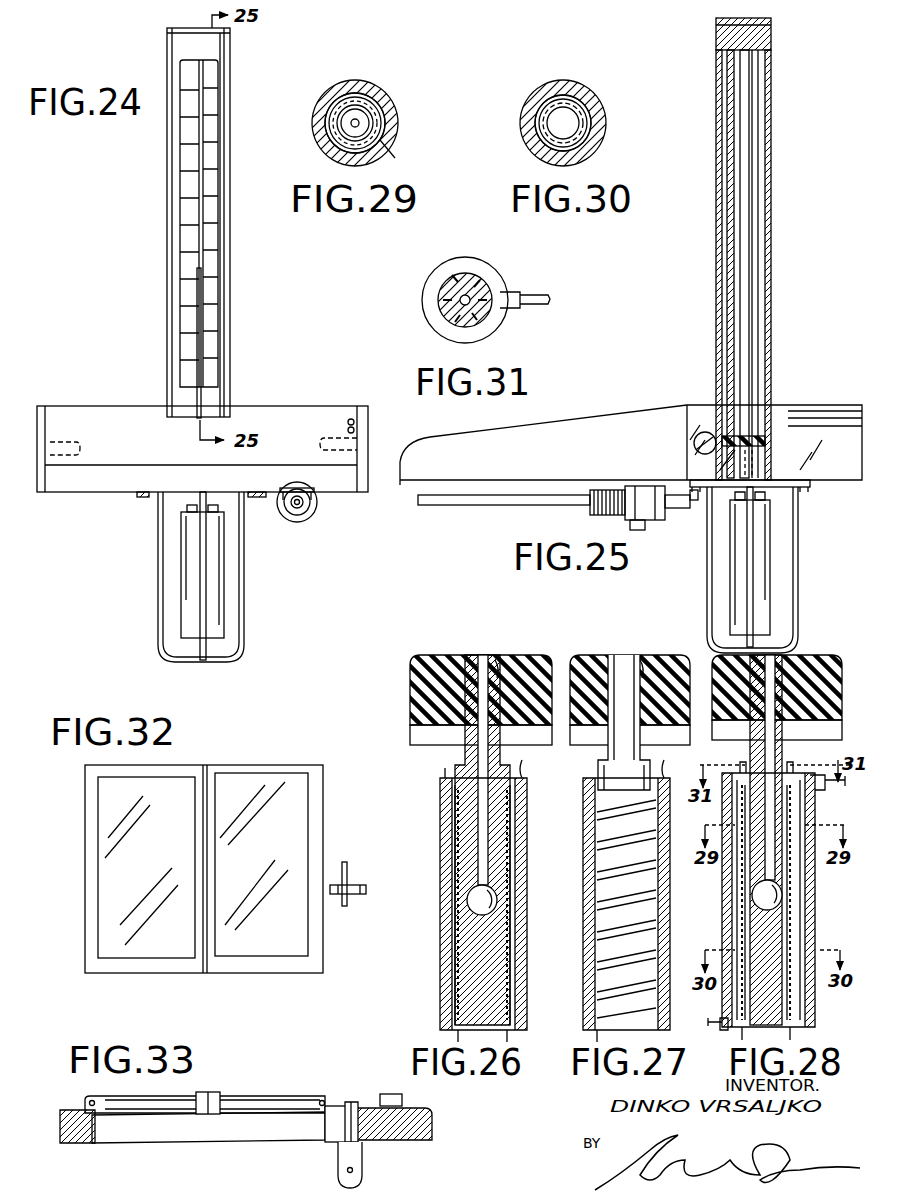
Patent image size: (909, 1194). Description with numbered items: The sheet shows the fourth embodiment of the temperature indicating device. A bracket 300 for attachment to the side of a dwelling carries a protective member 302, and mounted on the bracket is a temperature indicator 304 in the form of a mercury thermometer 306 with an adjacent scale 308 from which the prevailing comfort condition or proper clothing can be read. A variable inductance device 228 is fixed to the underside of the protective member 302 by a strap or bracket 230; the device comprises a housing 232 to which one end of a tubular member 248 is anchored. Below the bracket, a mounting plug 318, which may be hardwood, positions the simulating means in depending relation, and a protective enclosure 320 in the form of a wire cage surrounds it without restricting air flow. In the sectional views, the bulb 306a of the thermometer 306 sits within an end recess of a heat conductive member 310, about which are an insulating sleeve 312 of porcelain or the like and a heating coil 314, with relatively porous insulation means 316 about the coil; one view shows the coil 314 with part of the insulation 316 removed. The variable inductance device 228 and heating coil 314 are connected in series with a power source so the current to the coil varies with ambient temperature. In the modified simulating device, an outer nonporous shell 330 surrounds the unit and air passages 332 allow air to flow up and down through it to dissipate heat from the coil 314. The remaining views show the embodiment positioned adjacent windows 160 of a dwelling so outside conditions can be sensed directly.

In FIG. 32, the windows 160 is at (285, 775).
In FIG. 33, the windows 160 is at (276, 1105).
In FIG. 24, the variable inductance device 228 is at (300, 520).
In FIG. 25, the variable inductance device 228 is at (537, 512).
In FIG. 24, the strap or bracket 230 is at (313, 510).
In FIG. 25, the strap or bracket 230 is at (638, 526).
In FIG. 24, the housing 232 is at (305, 494).
In FIG. 25, the housing 232 is at (652, 490).
In FIG. 25, the tubular member 248 is at (476, 505).
In FIG. 24, the bracket 300 is at (42, 410).
In FIG. 25, the bracket 300 is at (712, 405).
In FIG. 26, the bracket 300 is at (548, 660).
In FIG. 27, the bracket 300 is at (684, 660).
In FIG. 28, the bracket 300 is at (838, 660).
In FIG. 25, the protective member 302 is at (545, 437).
In FIG. 24, the temperature indicator 304 is at (235, 290).
In FIG. 25, the temperature indicator 304 is at (708, 292).
In FIG. 32, the temperature indicator 304 is at (355, 880).
In FIG. 33, the temperature indicator 304 is at (380, 1092).
In FIG. 24, the mercury thermometer 306 is at (197, 300).
In FIG. 29, the mercury thermometer 306 is at (359, 121).
In FIG. 31, the mercury thermometer 306 is at (450, 300).
In FIG. 25, the mercury thermometer 306 is at (745, 270).
In FIG. 26, the mercury thermometer 306 is at (478, 660).
In FIG. 27, the mercury thermometer 306 is at (614, 660).
In FIG. 28, the mercury thermometer 306 is at (765, 748).
In FIG. 26, the bulb 306a is at (493, 893).
In FIG. 28, the bulb 306a is at (780, 892).
In FIG. 24, the scale 308 is at (215, 165).
In FIG. 25, the scale 308 is at (735, 195).
In FIG. 30, the heat conductive member 310 is at (585, 110).
In FIG. 26, the heat conductive member 310 is at (470, 958).
In FIG. 28, the heat conductive member 310 is at (772, 1026).
In FIG. 29, the insulating sleeve 312 is at (325, 148).
In FIG. 30, the insulating sleeve 312 is at (525, 143).
In FIG. 26, the insulating sleeve 312 is at (458, 921).
In FIG. 28, the insulating sleeve 312 is at (808, 1026).
In FIG. 29, the heating coil 314 is at (310, 128).
In FIG. 26, the heating coil 314 is at (456, 879).
In FIG. 27, the heating coil 314 is at (640, 924).
In FIG. 28, the heating coil 314 is at (800, 800).
In FIG. 24, the insulation means 316 is at (215, 585).
In FIG. 29, the insulation means 316 is at (340, 97).
In FIG. 30, the insulation means 316 is at (575, 97).
In FIG. 25, the insulation means 316 is at (760, 560).
In FIG. 26, the insulation means 316 is at (527, 906).
In FIG. 27, the insulation means 316 is at (662, 898).
In FIG. 28, the insulation means 316 is at (808, 1010).
In FIG. 24, the mounting plug 318 is at (186, 510).
In FIG. 29, the mounting plug 318 is at (356, 102).
In FIG. 31, the mounting plug 318 is at (445, 280).
In FIG. 25, the mounting plug 318 is at (765, 508).
In FIG. 26, the mounting plug 318 is at (497, 660).
In FIG. 27, the mounting plug 318 is at (640, 660).
In FIG. 28, the mounting plug 318 is at (794, 660).
In FIG. 24, the protective enclosure 320 is at (160, 614).
In FIG. 25, the protective enclosure 320 is at (800, 618).
In FIG. 29, the outer nonporous shell 330 is at (390, 120).
In FIG. 30, the outer nonporous shell 330 is at (590, 148).
In FIG. 31, the outer nonporous shell 330 is at (490, 318).
In FIG. 28, the outer nonporous shell 330 is at (815, 920).
In FIG. 29, the air passages 332 is at (360, 160).
In FIG. 28, the air passages 332 is at (808, 1000).